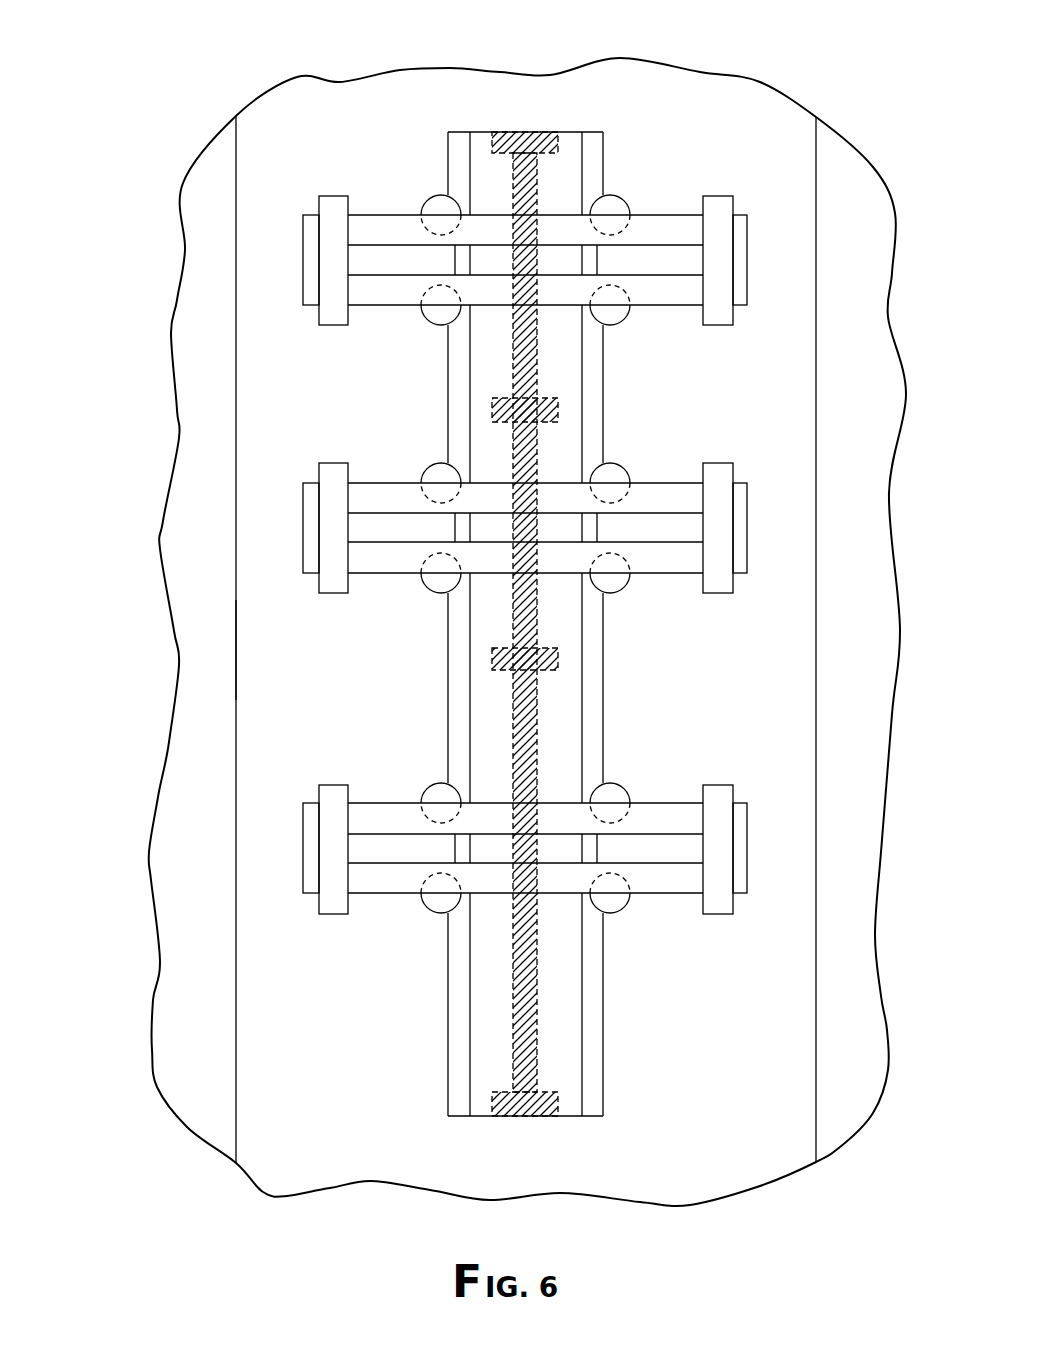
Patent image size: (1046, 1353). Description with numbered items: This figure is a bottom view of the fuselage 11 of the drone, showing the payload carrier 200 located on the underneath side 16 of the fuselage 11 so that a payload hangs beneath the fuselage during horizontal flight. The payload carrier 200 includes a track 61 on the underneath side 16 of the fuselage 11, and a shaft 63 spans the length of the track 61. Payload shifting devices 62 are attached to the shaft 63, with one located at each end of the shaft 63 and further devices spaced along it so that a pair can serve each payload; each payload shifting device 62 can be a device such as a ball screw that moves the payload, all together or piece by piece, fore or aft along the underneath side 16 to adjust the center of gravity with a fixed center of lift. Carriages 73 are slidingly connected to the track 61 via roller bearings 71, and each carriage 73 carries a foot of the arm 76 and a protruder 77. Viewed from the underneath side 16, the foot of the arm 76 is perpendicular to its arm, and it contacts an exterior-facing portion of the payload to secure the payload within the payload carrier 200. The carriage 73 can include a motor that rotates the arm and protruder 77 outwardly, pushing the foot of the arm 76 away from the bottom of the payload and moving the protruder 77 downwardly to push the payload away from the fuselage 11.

The payload carrier 200 is at (152, 134).
The fuselage 11 is at (860, 320).
The underneath side of the fuselage 16 is at (302, 414).
The track 61 is at (447, 142).
The payload shifting device 62 is at (550, 130).
The shaft 63 is at (538, 702).
The roller bearing 71 is at (435, 462).
The carriage 73 is at (560, 573).
The foot of the arm 76 is at (732, 518).
The protruder 77 is at (653, 512).